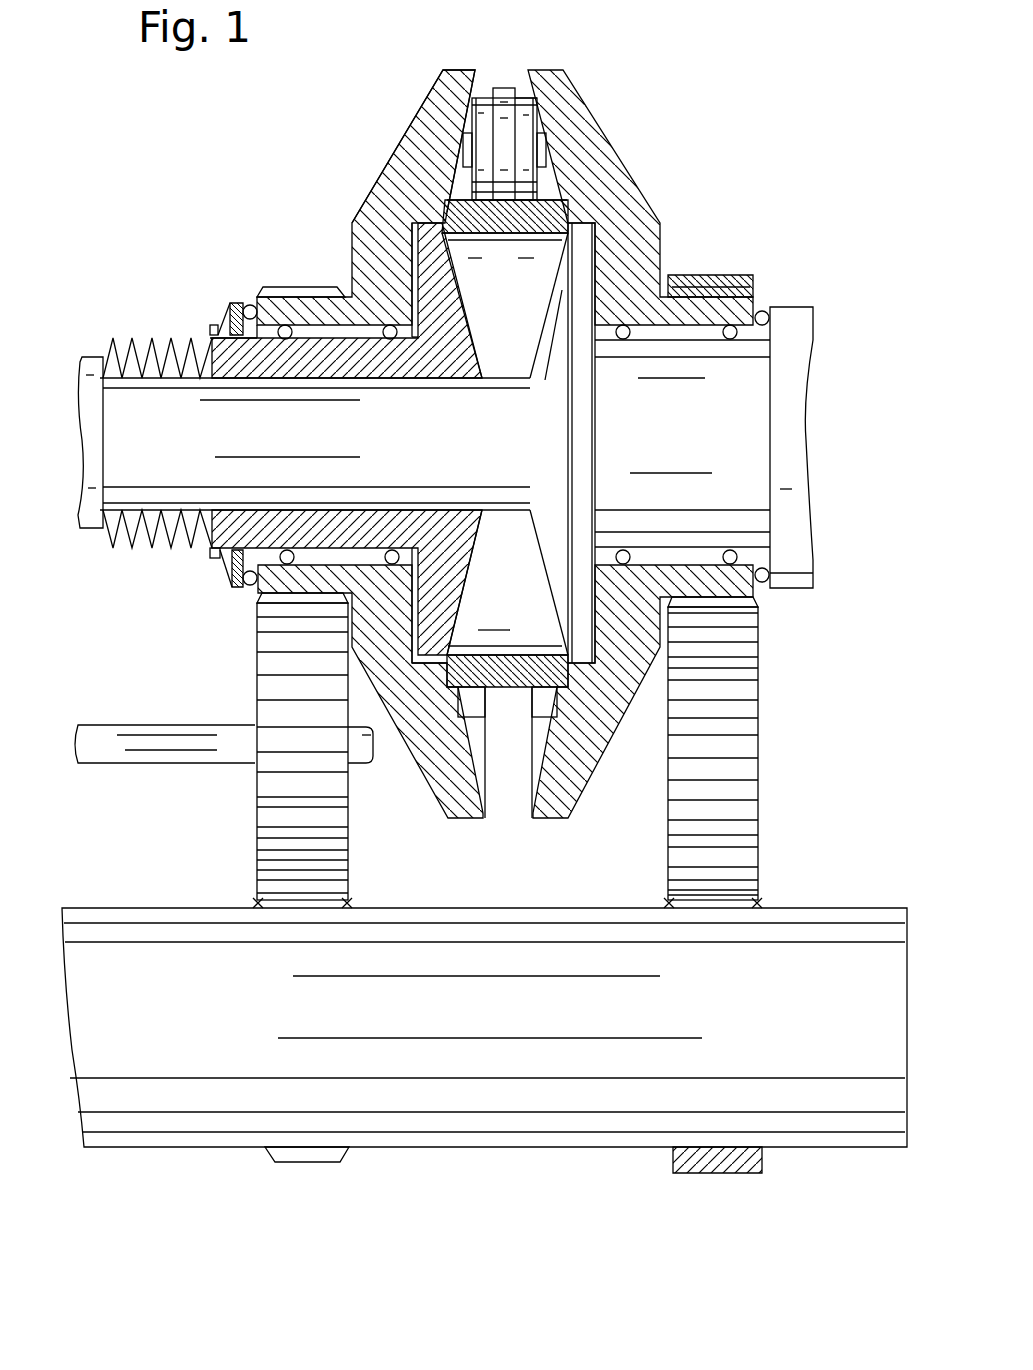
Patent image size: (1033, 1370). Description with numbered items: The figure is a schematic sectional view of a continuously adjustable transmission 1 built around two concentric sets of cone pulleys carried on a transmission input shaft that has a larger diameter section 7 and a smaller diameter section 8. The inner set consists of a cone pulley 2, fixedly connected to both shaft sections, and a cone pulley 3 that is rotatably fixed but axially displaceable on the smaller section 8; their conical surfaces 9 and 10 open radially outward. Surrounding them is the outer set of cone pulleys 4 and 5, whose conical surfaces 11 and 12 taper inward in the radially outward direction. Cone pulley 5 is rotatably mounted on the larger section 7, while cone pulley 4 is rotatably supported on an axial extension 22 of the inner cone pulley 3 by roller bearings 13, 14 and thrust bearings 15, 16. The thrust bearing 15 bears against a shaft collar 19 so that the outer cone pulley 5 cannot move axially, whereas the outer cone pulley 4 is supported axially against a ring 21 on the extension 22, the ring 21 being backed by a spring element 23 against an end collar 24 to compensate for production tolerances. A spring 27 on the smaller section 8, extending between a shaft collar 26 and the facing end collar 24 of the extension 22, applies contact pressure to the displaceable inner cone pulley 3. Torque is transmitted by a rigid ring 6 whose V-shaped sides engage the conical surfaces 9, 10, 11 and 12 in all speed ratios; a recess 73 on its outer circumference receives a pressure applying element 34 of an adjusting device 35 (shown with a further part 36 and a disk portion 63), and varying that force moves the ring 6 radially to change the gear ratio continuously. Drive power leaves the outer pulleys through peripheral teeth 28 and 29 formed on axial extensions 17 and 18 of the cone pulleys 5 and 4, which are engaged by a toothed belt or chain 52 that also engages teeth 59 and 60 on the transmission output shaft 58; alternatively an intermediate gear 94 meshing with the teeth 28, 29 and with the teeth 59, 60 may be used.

The pulley assembly 1 is at (670, 184).
The cone pulley 2 is at (578, 270).
The cone pulley 3 is at (433, 257).
The cone pulley 4 is at (390, 162).
The cone pulley 5 is at (593, 122).
The rigid ring 6 is at (583, 748).
The input shaft section 7 is at (747, 385).
The input shaft section 8 is at (115, 395).
The conical surface 9 is at (550, 287).
The conical surface 10 is at (468, 322).
The conical surface 11 is at (549, 700).
The conical surface 12 is at (470, 775).
The roller bearing 13 is at (742, 558).
The roller bearing 14 is at (262, 588).
The thrust bearing 15 is at (788, 588).
The thrust bearing 16 is at (241, 583).
The axial extension 17 is at (740, 308).
The axial extension 18 is at (297, 287).
The shaft collar 19 is at (773, 332).
The ring 21 is at (237, 313).
The axial extension 22 is at (222, 360).
The spring element 23 is at (222, 318).
The end collar 24 is at (222, 553).
The shaft collar 26 is at (97, 530).
The spring 27 is at (112, 345).
The peripheral teeth 28 is at (745, 602).
The peripheral teeth 29 is at (298, 597).
The pressure applying element 34 is at (480, 113).
The adjusting device 35 is at (507, 85).
The roller flange 36 is at (530, 117).
The toothed belt or chain 52 is at (735, 862).
The transmission output shaft 58 is at (531, 1032).
The teeth 59 is at (705, 1162).
The teeth 60 is at (300, 1158).
The cone disk 63 is at (426, 104).
The recess 73 is at (506, 690).
The intermediate gear 94 is at (256, 797).